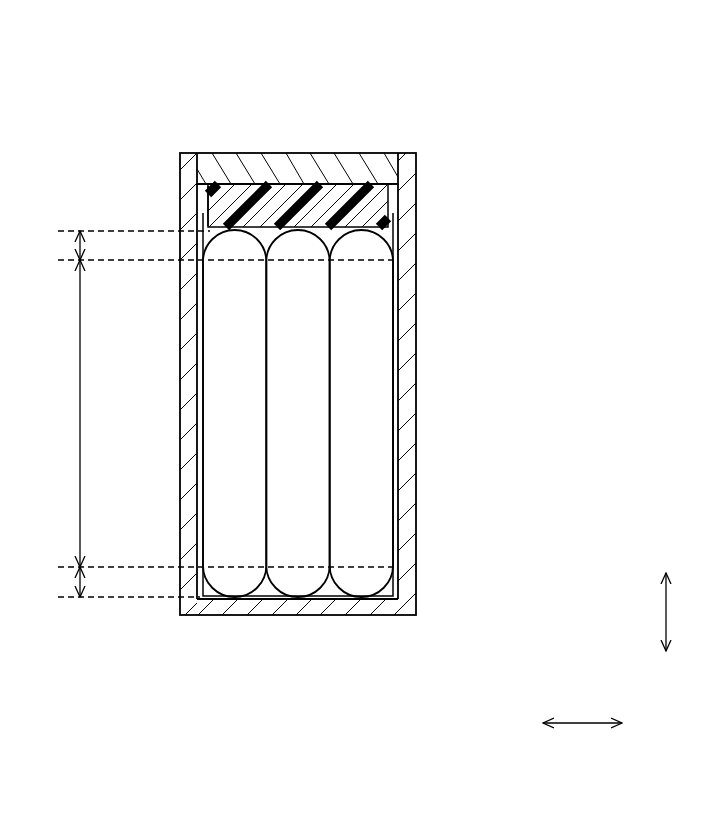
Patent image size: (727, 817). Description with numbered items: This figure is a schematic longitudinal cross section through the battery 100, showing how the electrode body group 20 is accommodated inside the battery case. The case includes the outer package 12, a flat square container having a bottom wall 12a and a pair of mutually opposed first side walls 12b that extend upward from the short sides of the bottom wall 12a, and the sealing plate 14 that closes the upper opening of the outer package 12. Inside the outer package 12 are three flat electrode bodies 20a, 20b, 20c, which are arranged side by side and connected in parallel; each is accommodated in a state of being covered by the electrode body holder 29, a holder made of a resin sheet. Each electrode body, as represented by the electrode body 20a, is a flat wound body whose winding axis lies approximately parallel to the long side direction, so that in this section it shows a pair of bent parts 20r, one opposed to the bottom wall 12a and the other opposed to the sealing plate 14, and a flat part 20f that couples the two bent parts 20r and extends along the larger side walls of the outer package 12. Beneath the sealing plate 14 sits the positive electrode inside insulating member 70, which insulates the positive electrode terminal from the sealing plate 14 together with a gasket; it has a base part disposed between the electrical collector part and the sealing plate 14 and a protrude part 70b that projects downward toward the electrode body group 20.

The battery 100 is at (398, 72).
The outer package 12 is at (420, 473).
The bottom wall 12a is at (390, 618).
The first side wall 12b is at (178, 510).
The sealing plate 14 is at (393, 152).
The electrode body holder 29 is at (393, 423).
The positive electrode inside insulating member 70 is at (93, 190).
The protrude part 70b is at (198, 210).
The electrode body group 20 is at (405, 707).
The electrode body 20a is at (365, 582).
The electrode body 20b is at (307, 582).
The electrode body 20c is at (250, 577).
The bent part 20r is at (215, 414).
The flat part 20f is at (59, 413).